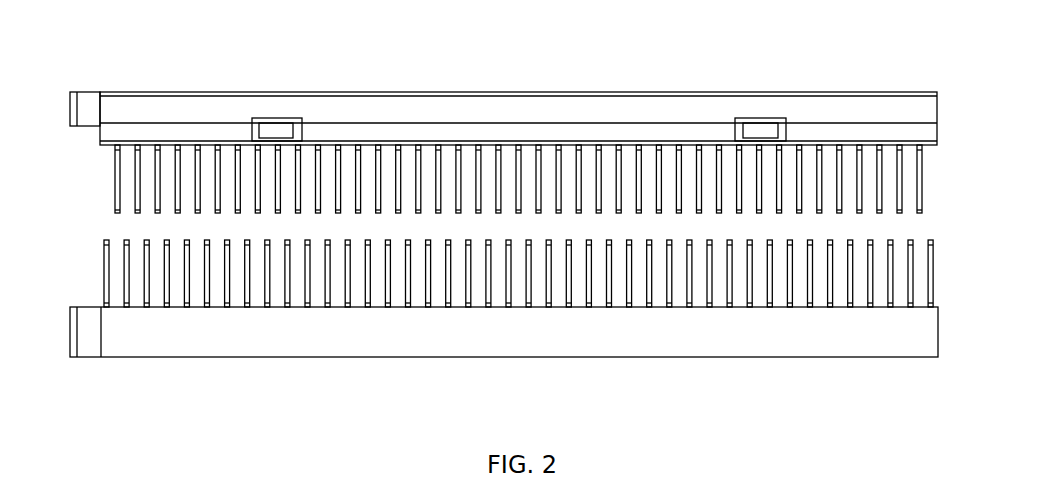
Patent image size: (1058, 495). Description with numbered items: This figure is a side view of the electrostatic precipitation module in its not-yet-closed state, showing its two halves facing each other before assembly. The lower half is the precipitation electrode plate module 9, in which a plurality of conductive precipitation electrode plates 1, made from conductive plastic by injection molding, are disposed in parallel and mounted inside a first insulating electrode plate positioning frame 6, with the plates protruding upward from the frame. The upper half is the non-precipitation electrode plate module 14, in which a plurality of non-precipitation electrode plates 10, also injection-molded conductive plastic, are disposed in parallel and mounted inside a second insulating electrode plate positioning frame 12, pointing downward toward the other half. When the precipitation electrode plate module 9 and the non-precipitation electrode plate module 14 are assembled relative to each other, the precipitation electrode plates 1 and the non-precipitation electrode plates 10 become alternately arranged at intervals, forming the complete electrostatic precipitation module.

The conductive precipitation electrode plates 1 is at (501, 331).
The first insulating electrode plate positioning frame 6 is at (347, 333).
The precipitation electrode plate module 9 is at (858, 297).
The non-precipitation electrode plates 10 is at (489, 121).
The second insulating electrode plate positioning frame 12 is at (330, 103).
The non-precipitation electrode plate module 14 is at (828, 160).